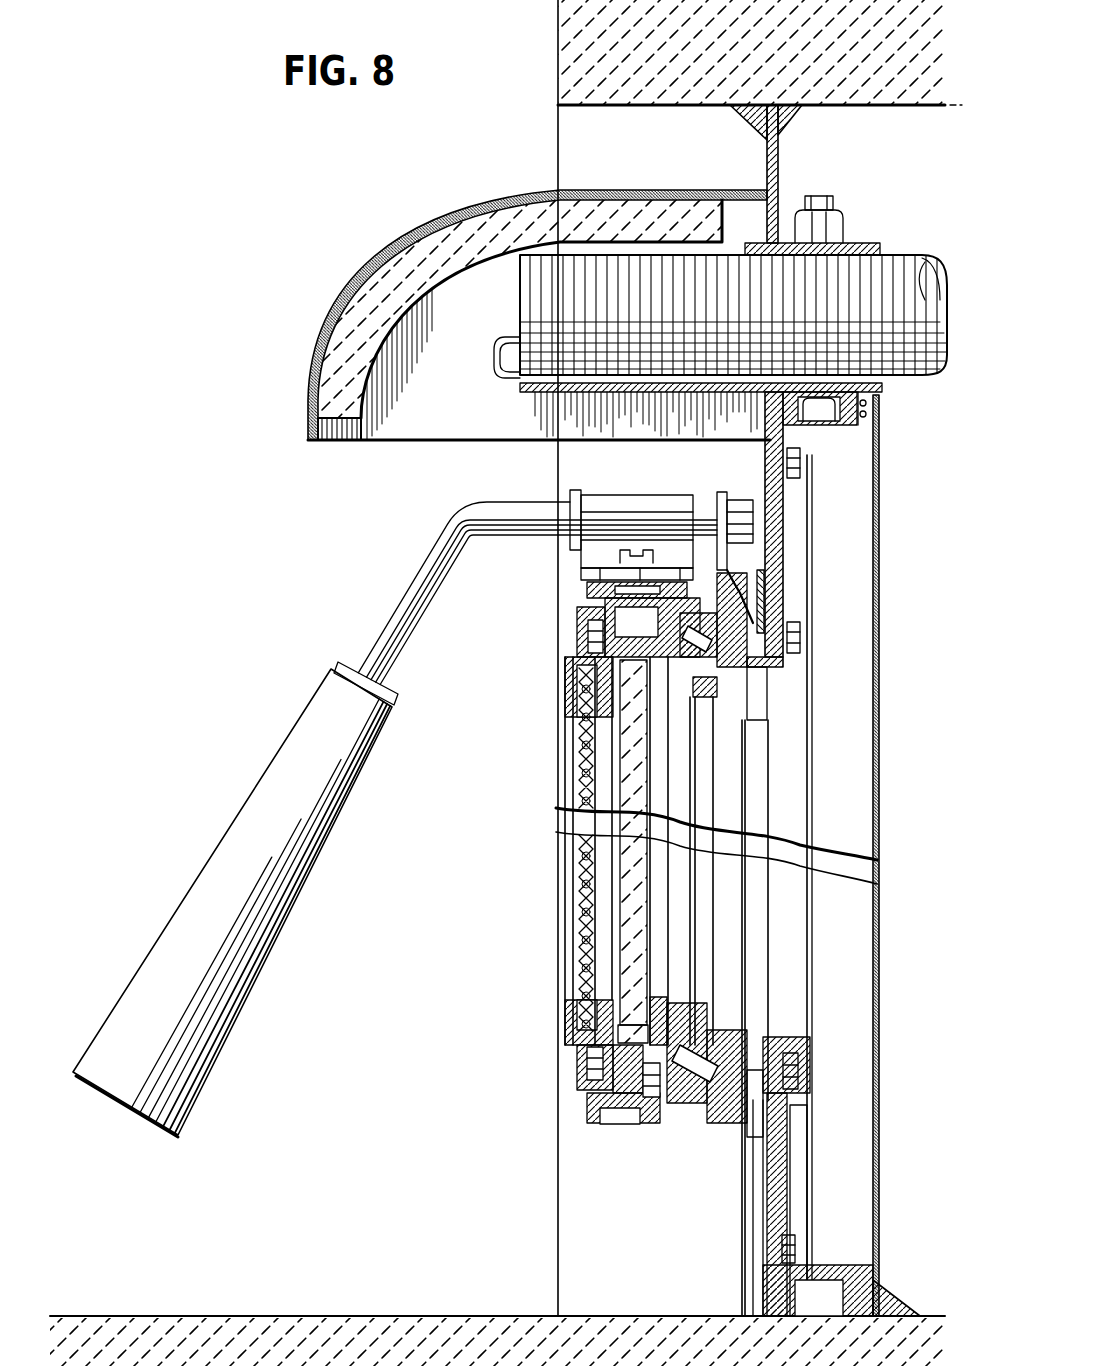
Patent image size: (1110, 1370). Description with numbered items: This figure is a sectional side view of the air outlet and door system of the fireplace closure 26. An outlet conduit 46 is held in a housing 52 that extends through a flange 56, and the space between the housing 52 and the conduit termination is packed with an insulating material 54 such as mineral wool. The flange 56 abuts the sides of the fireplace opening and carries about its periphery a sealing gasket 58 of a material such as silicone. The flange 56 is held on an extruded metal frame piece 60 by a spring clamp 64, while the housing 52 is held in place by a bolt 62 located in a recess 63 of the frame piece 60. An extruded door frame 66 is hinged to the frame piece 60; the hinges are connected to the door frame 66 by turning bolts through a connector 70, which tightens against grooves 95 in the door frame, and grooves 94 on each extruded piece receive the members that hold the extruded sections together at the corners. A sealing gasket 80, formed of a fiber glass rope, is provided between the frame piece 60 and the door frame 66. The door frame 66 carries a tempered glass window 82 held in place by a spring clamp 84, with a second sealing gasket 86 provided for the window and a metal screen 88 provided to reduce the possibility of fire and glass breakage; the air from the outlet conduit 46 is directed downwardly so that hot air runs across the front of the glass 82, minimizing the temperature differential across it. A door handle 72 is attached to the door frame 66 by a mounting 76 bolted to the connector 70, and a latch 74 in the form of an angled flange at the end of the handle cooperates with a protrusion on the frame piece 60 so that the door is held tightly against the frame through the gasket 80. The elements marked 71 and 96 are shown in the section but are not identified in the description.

The closure 26 is at (560, 915).
The outlet conduit 46 is at (902, 256).
The housing 52 is at (418, 230).
The insulating material 54 is at (375, 308).
The flange 56 is at (768, 160).
The sealing gasket 58 is at (747, 118).
The extruded frame piece 60 is at (826, 505).
The bolt 62 is at (812, 196).
The recess 63 is at (838, 440).
The spring clamp 64 is at (818, 598).
The extruded door frame 66 is at (560, 1022).
The connector 70 is at (587, 582).
The bracket 71 is at (652, 552).
The handle 72 is at (236, 838).
The latch 74 is at (770, 568).
The mounting 76 is at (605, 503).
The sealing gasket 80 is at (748, 684).
The tempered glass window 82 is at (626, 766).
The spring clamp 84 is at (620, 655).
The second sealing gasket 86 is at (572, 686).
The metal screen 88 is at (586, 883).
The grooves 94 is at (788, 462).
The grooves 95 is at (590, 607).
The bearing 96 is at (716, 700).